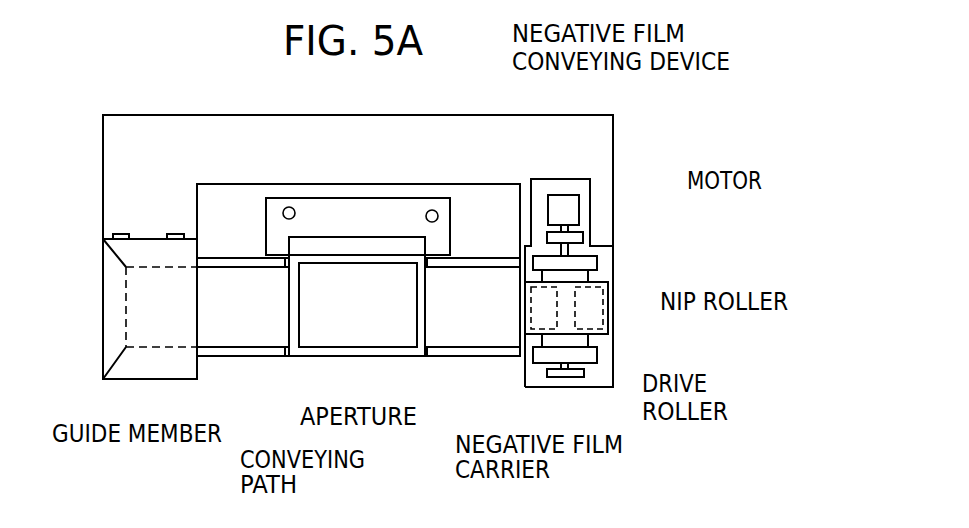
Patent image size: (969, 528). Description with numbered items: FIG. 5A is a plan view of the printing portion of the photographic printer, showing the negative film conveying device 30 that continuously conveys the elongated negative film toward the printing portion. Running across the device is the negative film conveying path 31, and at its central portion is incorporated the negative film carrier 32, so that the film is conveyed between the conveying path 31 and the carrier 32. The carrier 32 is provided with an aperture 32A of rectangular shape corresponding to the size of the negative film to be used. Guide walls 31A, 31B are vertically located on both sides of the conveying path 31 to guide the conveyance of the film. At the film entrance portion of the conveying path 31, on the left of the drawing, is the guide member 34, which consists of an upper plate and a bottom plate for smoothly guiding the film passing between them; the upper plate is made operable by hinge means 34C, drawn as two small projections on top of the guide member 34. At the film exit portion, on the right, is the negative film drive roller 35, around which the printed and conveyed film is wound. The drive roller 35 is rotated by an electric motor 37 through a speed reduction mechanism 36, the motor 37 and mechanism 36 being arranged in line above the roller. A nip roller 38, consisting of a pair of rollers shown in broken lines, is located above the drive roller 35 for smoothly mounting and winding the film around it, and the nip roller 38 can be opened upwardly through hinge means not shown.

The negative film conveying device 30 is at (620, 133).
The negative film conveying path 31 is at (258, 333).
The guide wall 31A is at (217, 357).
The guide wall 31B is at (217, 257).
The negative film carrier 32 is at (408, 358).
The aperture 32A is at (322, 330).
The guide member 34 is at (93, 363).
The hinge means 34C is at (172, 234).
The negative film drive roller 35 is at (590, 340).
The speed reduction mechanism 36 is at (583, 238).
The electric motor 37 is at (579, 203).
The nip roller 38 is at (608, 282).